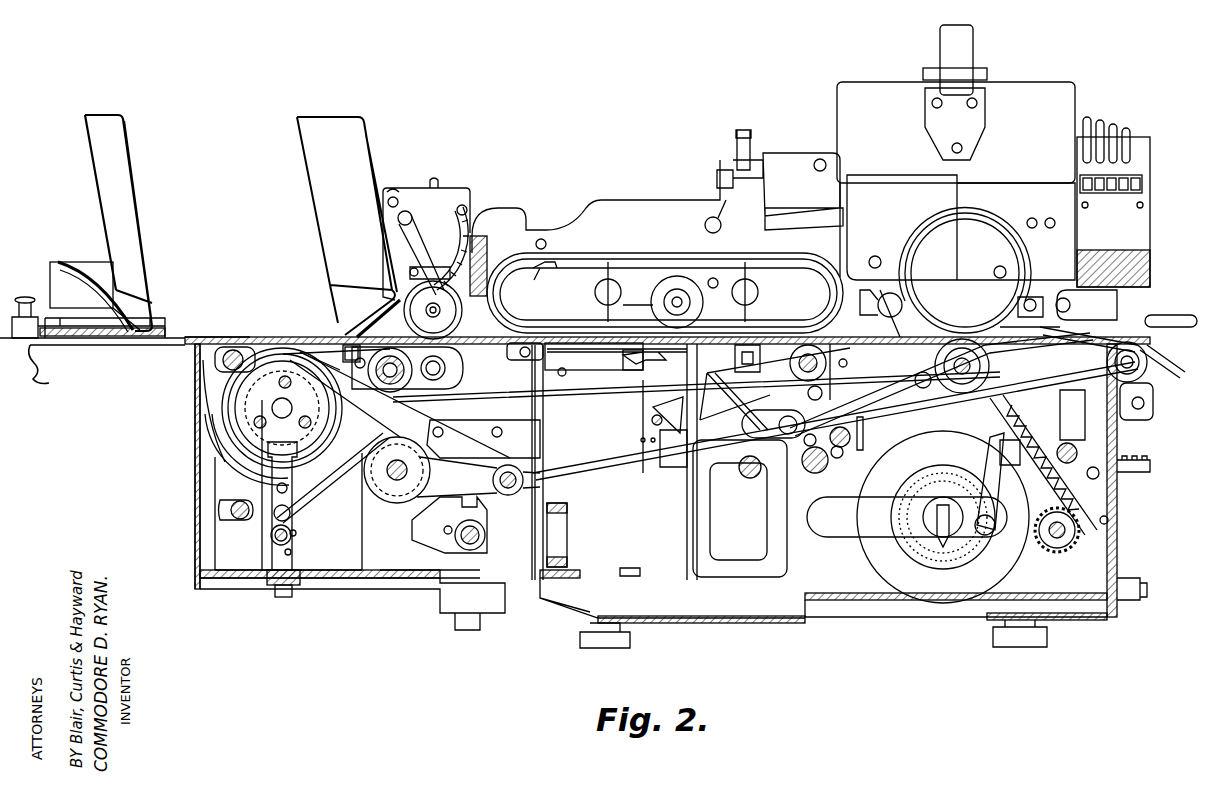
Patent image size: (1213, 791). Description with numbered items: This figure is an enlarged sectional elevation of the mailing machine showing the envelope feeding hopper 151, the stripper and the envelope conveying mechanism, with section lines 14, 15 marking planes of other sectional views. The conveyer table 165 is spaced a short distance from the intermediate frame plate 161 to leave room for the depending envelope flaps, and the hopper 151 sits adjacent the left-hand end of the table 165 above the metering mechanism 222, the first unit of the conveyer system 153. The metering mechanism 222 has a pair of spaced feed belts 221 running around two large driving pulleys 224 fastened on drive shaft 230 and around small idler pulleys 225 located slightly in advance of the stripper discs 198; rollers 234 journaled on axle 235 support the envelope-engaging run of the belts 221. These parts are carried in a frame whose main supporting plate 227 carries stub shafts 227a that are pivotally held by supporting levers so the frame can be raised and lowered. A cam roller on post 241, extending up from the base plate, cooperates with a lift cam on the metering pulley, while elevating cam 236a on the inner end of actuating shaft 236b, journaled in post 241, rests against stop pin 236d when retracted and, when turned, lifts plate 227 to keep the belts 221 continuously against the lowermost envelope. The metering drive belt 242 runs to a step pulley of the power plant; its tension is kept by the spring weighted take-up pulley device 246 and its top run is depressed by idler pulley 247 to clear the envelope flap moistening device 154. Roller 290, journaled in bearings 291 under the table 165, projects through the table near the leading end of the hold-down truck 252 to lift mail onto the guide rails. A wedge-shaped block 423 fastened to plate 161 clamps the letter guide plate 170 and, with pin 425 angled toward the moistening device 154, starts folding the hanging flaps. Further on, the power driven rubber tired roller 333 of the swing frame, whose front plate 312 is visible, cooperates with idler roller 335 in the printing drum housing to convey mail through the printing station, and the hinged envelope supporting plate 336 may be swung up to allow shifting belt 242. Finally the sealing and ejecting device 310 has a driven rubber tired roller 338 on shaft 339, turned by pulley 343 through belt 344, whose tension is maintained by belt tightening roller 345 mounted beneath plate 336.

The envelope feeding hopper 151 is at (263, 108).
The section line 14 is at (226, 113).
The conveyer table 165 is at (240, 337).
The stub shafts 227a is at (313, 342).
The rollers 234 is at (348, 345).
The axle 235 is at (365, 345).
The stripper mechanism discs 198 is at (436, 307).
The intermediate frame plate 161 is at (590, 206).
The conveyer system 153 is at (636, 235).
The hold-down truck mechanism 252 is at (681, 238).
The section line 15 is at (730, 226).
The final sealing and ejecting device 310 is at (1166, 240).
The idler roller 335 is at (905, 312).
The envelope supporting plate 336 is at (1031, 312).
The belt tightening roller 345 is at (1086, 305).
The belt 344 is at (1138, 318).
The driven pulley 343 is at (1148, 325).
The shaft 339 is at (1150, 347).
The driven rubber tired roller 338 is at (1153, 394).
The conveyer roller 333 is at (941, 384).
The feed belts 221 is at (220, 380).
The drive shaft 230 is at (282, 408).
The large driving pulleys 224 is at (228, 437).
The metering mechanism 222 is at (212, 473).
The idler pulley 247 is at (380, 380).
The main supporting plate 227 is at (395, 408).
The take-up pulley device 246 is at (415, 462).
The idler pulleys 225 is at (445, 370).
The bearings 291 is at (508, 352).
The roller 290 is at (545, 372).
The wedge-shaped block 423 is at (563, 376).
The pin 425 is at (589, 373).
The letter guide plate 170 is at (637, 387).
The belt 242 is at (609, 437).
The envelope flap moistening device 154 is at (713, 395).
The front plate 312 is at (757, 478).
The post 241 is at (296, 556).
The elevating cam 236a is at (271, 536).
The actuating shaft 236b is at (296, 533).
The stop pin 236d is at (285, 553).